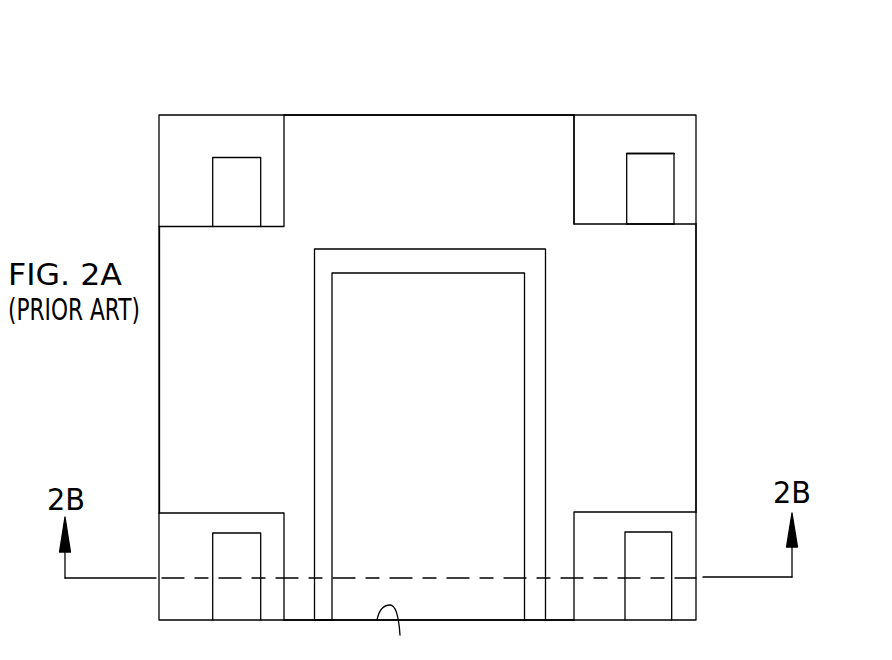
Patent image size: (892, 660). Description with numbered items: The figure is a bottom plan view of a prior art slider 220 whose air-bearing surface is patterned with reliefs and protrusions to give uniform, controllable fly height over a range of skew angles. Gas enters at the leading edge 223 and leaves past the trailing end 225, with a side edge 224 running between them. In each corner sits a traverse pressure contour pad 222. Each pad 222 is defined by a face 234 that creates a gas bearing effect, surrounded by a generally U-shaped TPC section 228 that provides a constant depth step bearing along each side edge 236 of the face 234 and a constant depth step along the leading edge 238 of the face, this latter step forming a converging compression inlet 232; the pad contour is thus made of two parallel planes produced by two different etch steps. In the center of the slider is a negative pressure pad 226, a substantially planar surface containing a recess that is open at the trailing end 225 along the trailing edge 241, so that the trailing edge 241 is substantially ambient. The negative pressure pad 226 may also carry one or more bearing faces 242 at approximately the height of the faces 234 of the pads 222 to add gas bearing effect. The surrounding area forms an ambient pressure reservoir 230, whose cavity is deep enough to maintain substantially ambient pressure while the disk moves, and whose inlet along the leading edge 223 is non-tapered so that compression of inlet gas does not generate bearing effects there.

The prior art semiconductor device 220 is at (364, 367).
The traverse pressure contour (TPC) pad 222 is at (159, 152).
The leading edge 223 is at (465, 115).
The side edge 224 is at (697, 275).
The trailing end 225 is at (495, 620).
The negative pressure pad 226 is at (547, 233).
The U-shaped TPC section 228 is at (685, 177).
The ambient pressure reservoir 230 is at (185, 437).
The converging compression inlet 232 is at (638, 127).
The face 234 is at (667, 216).
The side edge 236 is at (674, 197).
The leading edge 238 is at (655, 155).
The trailing edge 241 is at (395, 629).
The bearing face 242 is at (326, 610).